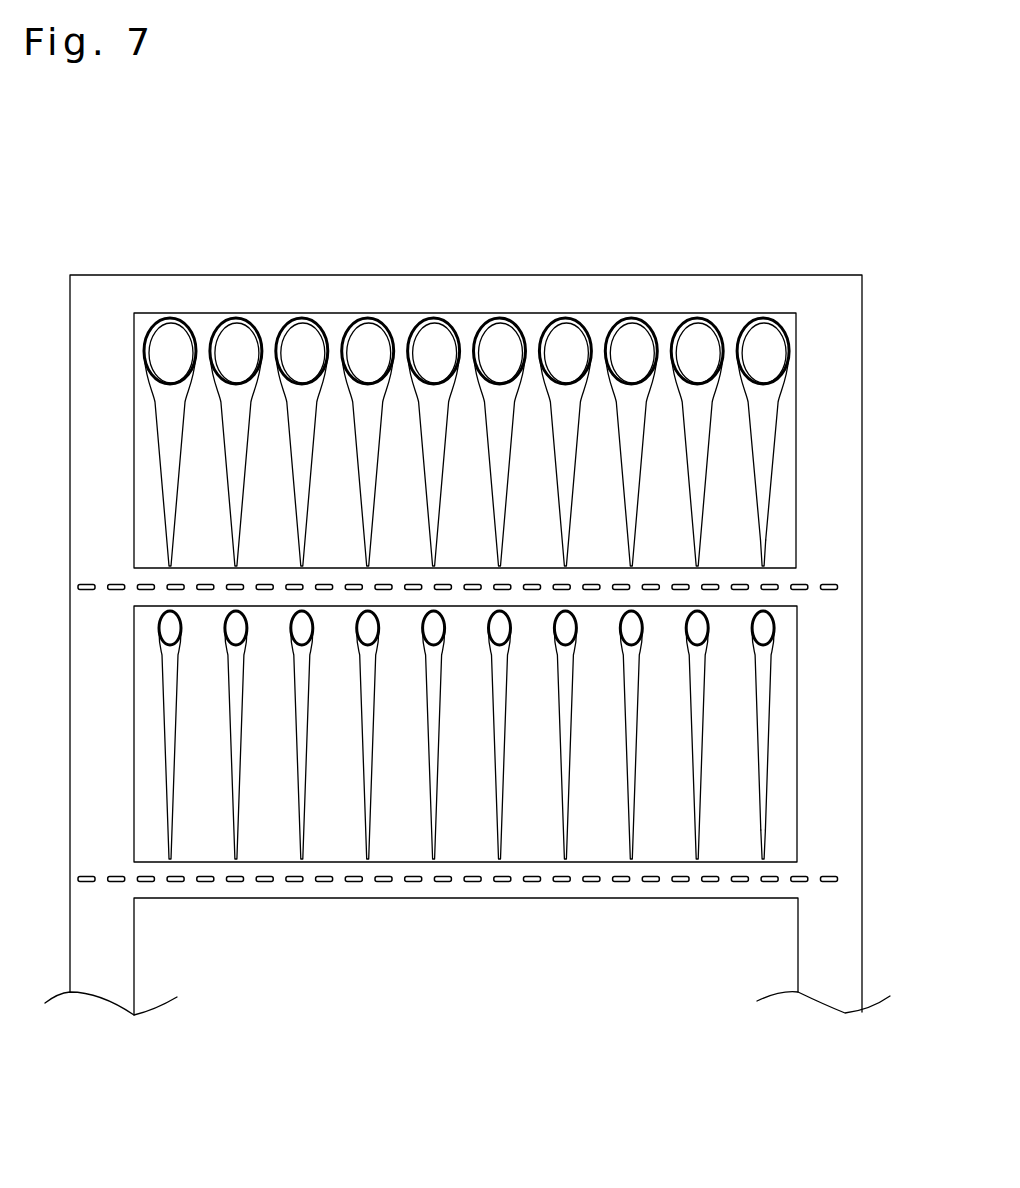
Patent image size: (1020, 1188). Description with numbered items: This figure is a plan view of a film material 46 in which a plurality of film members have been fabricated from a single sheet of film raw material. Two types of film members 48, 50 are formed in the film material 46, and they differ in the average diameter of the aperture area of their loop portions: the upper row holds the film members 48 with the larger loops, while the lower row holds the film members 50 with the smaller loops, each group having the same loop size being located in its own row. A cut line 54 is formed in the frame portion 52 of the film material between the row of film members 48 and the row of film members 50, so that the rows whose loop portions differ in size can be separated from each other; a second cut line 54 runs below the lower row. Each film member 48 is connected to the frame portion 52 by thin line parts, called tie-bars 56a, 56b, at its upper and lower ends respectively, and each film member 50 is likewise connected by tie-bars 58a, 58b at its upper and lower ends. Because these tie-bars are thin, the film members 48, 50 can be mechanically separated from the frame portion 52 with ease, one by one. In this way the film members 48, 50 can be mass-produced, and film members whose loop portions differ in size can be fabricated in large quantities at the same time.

The film material 46 is at (573, 252).
The frame portion 52 is at (414, 295).
The film member 48 is at (499, 382).
The film member 50 is at (493, 733).
The cut line 54 is at (473, 592).
The tie-bar 56a is at (765, 315).
The tie-bar 56b is at (765, 577).
The tie-bar 58a is at (765, 606).
The tie-bar 58b is at (765, 860).